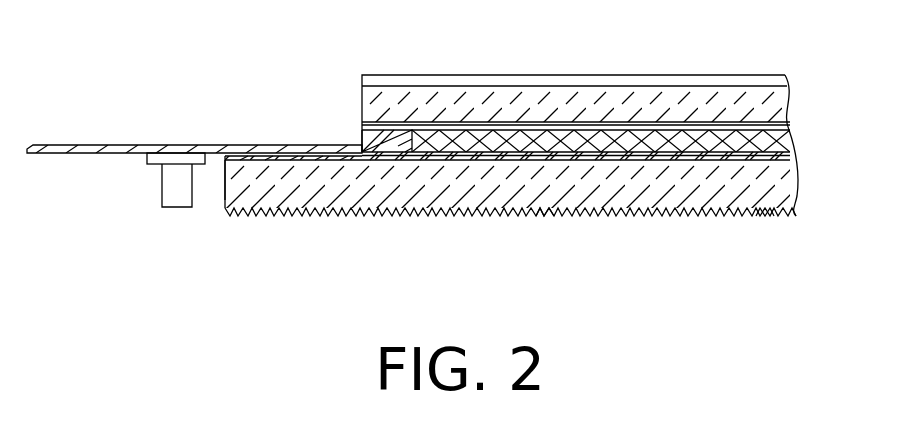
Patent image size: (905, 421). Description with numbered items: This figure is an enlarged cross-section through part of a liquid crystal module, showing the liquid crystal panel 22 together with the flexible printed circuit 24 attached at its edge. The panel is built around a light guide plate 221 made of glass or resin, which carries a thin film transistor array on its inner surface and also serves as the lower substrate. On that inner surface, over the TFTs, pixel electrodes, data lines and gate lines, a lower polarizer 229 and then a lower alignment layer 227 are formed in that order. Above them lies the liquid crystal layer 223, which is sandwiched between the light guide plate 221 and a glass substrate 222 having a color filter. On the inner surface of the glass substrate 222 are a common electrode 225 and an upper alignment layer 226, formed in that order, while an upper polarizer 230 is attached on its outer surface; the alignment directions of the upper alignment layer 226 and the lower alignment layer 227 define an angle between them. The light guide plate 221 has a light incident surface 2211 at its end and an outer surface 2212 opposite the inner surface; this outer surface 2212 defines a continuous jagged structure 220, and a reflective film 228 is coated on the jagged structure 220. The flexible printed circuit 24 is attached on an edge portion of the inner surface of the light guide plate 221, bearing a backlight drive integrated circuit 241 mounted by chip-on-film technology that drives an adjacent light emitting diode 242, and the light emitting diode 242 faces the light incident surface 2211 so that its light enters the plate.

The liquid crystal panel 22 is at (185, 58).
The flexible printed circuit 24 is at (78, 147).
The backlight drive integrated circuit 241 is at (156, 158).
The light emitting diode 242 is at (170, 185).
The jagged structure 220 is at (648, 212).
The light incident surface 2211 is at (223, 193).
The outer surface 2212 is at (545, 217).
The light guide plate 221 is at (687, 186).
The glass substrate 222 is at (770, 108).
The liquid crystal layer 223 is at (540, 145).
The common electrode 225 is at (788, 122).
The upper alignment layer 226 is at (790, 130).
The lower alignment layer 227 is at (792, 157).
The reflective film 228 is at (765, 218).
The lower polarizer 229 is at (763, 168).
The upper polarizer 230 is at (765, 83).